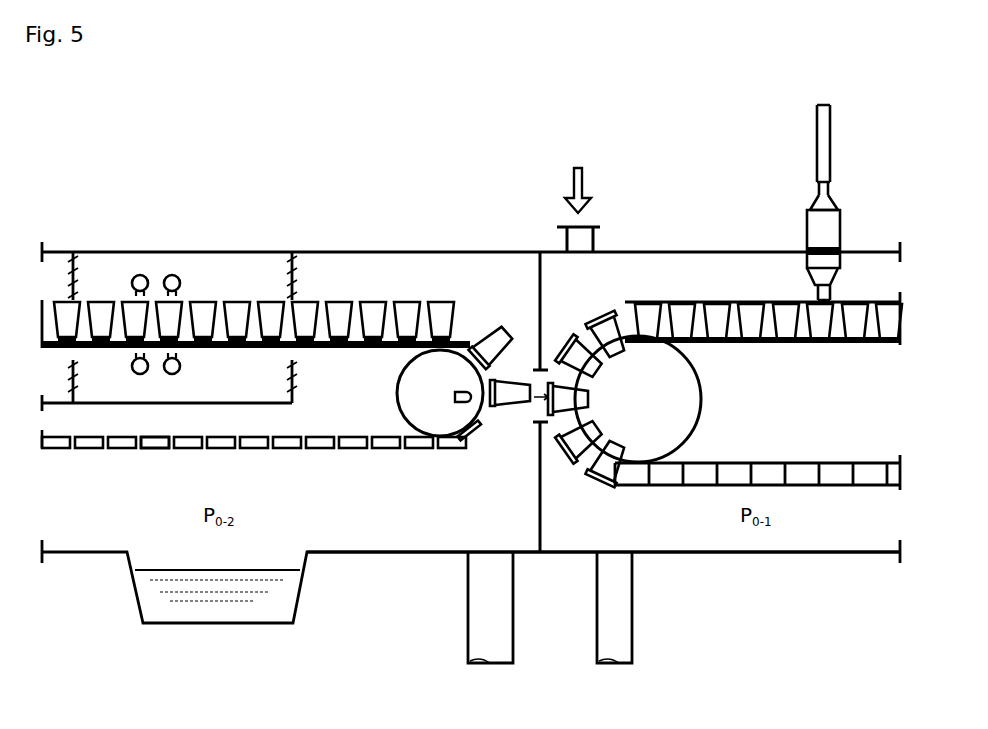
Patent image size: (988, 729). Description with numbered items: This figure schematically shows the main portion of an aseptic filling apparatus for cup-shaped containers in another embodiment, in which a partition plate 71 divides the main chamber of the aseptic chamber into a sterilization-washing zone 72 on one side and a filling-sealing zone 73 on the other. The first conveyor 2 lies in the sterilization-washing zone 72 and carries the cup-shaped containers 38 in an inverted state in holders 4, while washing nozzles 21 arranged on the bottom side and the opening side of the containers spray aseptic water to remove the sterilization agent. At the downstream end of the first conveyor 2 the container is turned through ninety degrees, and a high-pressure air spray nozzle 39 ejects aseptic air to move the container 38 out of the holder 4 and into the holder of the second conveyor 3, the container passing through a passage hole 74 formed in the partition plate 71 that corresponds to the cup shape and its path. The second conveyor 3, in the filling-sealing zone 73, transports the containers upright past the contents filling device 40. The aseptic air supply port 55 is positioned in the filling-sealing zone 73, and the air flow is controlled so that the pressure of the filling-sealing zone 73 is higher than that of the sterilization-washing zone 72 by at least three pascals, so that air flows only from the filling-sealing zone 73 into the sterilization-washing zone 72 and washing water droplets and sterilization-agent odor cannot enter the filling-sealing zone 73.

The first conveyor 2 is at (100, 450).
The second conveyor 3 is at (773, 460).
The holder 4 is at (145, 450).
The washing nozzle 21 is at (172, 275).
The cup-shaped container 38 is at (492, 336).
The high-pressure air spray nozzle 39 is at (462, 403).
The contents filling device 40 is at (832, 170).
The aseptic air supply port 55 is at (600, 242).
The partition plate 71 is at (540, 488).
The sterilization-washing zone 72 is at (398, 527).
The filling-sealing zone 73 is at (663, 527).
The passage hole 74 is at (538, 405).